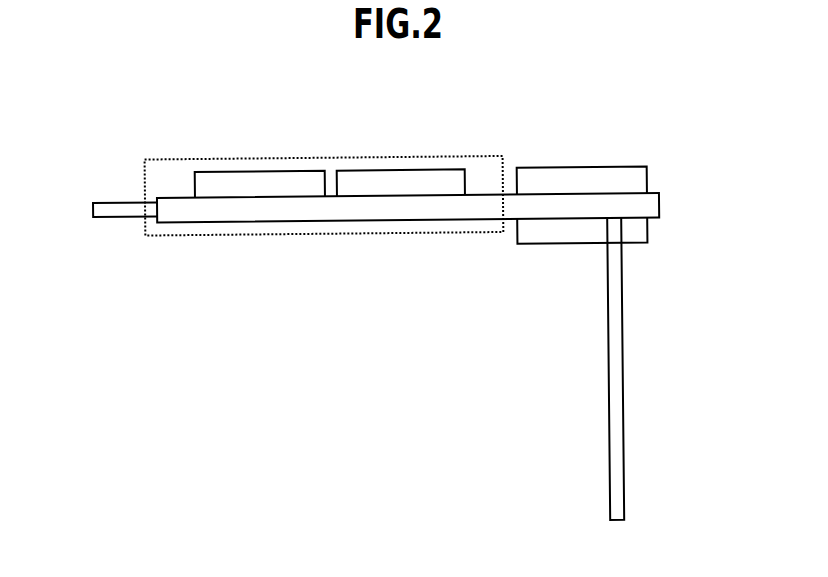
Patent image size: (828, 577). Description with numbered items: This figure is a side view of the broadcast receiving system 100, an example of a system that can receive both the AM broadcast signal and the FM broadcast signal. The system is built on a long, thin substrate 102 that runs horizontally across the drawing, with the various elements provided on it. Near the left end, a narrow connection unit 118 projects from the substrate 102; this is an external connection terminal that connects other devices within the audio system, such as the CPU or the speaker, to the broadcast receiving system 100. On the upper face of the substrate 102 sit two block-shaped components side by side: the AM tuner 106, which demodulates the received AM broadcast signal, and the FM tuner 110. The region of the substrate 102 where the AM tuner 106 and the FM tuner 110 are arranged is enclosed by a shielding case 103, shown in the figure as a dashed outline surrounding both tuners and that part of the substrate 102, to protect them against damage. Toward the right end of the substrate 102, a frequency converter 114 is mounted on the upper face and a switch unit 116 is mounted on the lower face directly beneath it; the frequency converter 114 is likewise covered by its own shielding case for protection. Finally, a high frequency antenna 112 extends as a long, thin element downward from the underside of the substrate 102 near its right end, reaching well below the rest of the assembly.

The broadcast receiving system 100 is at (729, 116).
The substrate 102 is at (659, 203).
The shielding case 103 is at (167, 158).
The AM tuner 106 is at (271, 178).
The FM tuner 110 is at (437, 175).
The high frequency antenna 112 is at (623, 470).
The frequency converter 114 is at (617, 172).
The switch unit 116 is at (545, 243).
The connection unit 118 is at (105, 222).